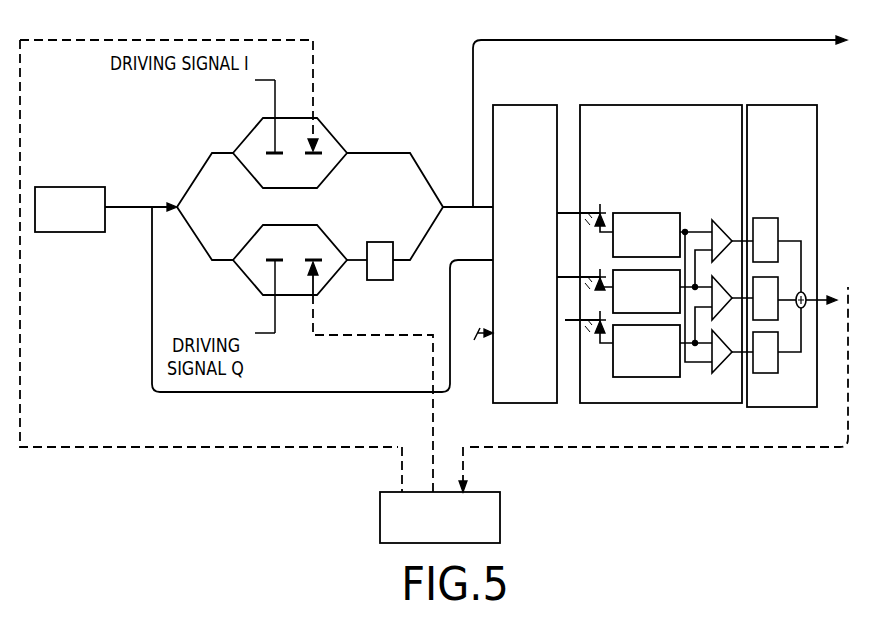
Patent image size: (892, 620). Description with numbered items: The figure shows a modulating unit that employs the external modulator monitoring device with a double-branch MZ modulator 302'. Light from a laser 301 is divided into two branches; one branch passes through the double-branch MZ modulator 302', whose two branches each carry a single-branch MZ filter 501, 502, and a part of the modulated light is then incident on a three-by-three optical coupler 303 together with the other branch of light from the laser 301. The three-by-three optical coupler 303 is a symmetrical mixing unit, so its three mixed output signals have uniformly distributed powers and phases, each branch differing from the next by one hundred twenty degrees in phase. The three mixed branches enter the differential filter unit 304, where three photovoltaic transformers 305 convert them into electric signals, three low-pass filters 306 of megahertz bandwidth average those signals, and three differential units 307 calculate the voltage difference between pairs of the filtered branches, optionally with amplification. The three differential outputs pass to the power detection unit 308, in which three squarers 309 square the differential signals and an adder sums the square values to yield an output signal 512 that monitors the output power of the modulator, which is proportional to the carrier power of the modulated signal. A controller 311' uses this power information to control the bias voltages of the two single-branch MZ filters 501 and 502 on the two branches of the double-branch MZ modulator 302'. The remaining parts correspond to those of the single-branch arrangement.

The laser 301 is at (82, 187).
The double-branch MZ modulator 302' is at (476, 214).
The single-branch MZ filter 501 is at (348, 112).
The single-branch MZ filter 502 is at (331, 236).
The 3×3 optical coupler 303 is at (548, 105).
The differential filter unit 304 is at (655, 233).
The photovoltaic transformer 305 is at (602, 200).
The low-pass filter 306 is at (649, 212).
The differential unit 307 is at (716, 218).
The power detection unit 308 is at (799, 234).
The squarer 309 is at (769, 216).
The adder output signal 512 is at (807, 290).
The controller 311' is at (440, 488).